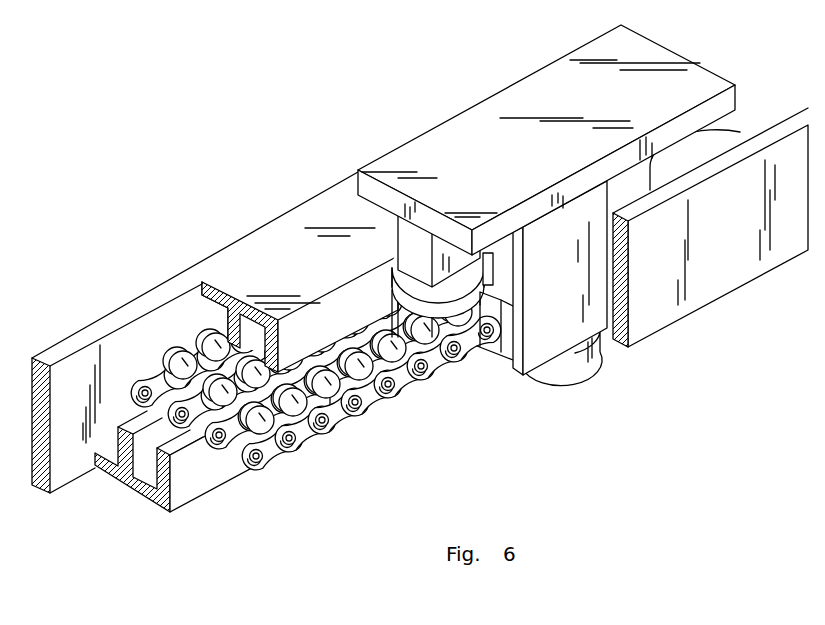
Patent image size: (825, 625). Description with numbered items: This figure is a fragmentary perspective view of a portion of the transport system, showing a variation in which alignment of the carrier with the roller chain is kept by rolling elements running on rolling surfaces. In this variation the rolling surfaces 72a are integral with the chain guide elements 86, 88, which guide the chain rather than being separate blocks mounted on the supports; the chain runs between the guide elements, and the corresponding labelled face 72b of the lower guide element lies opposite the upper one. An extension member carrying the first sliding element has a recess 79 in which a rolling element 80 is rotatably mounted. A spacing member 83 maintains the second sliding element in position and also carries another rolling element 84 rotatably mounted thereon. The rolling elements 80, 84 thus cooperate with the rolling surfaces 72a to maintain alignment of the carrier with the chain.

The rolling surface 72a is at (300, 281).
The lower chain guide 72b is at (250, 440).
The recess 79 is at (495, 267).
The rolling element 80 is at (398, 288).
The spacing member 83 is at (548, 336).
The rolling element 84 is at (577, 369).
The chain guide element 86 is at (133, 476).
The chain guide element 88 is at (240, 303).